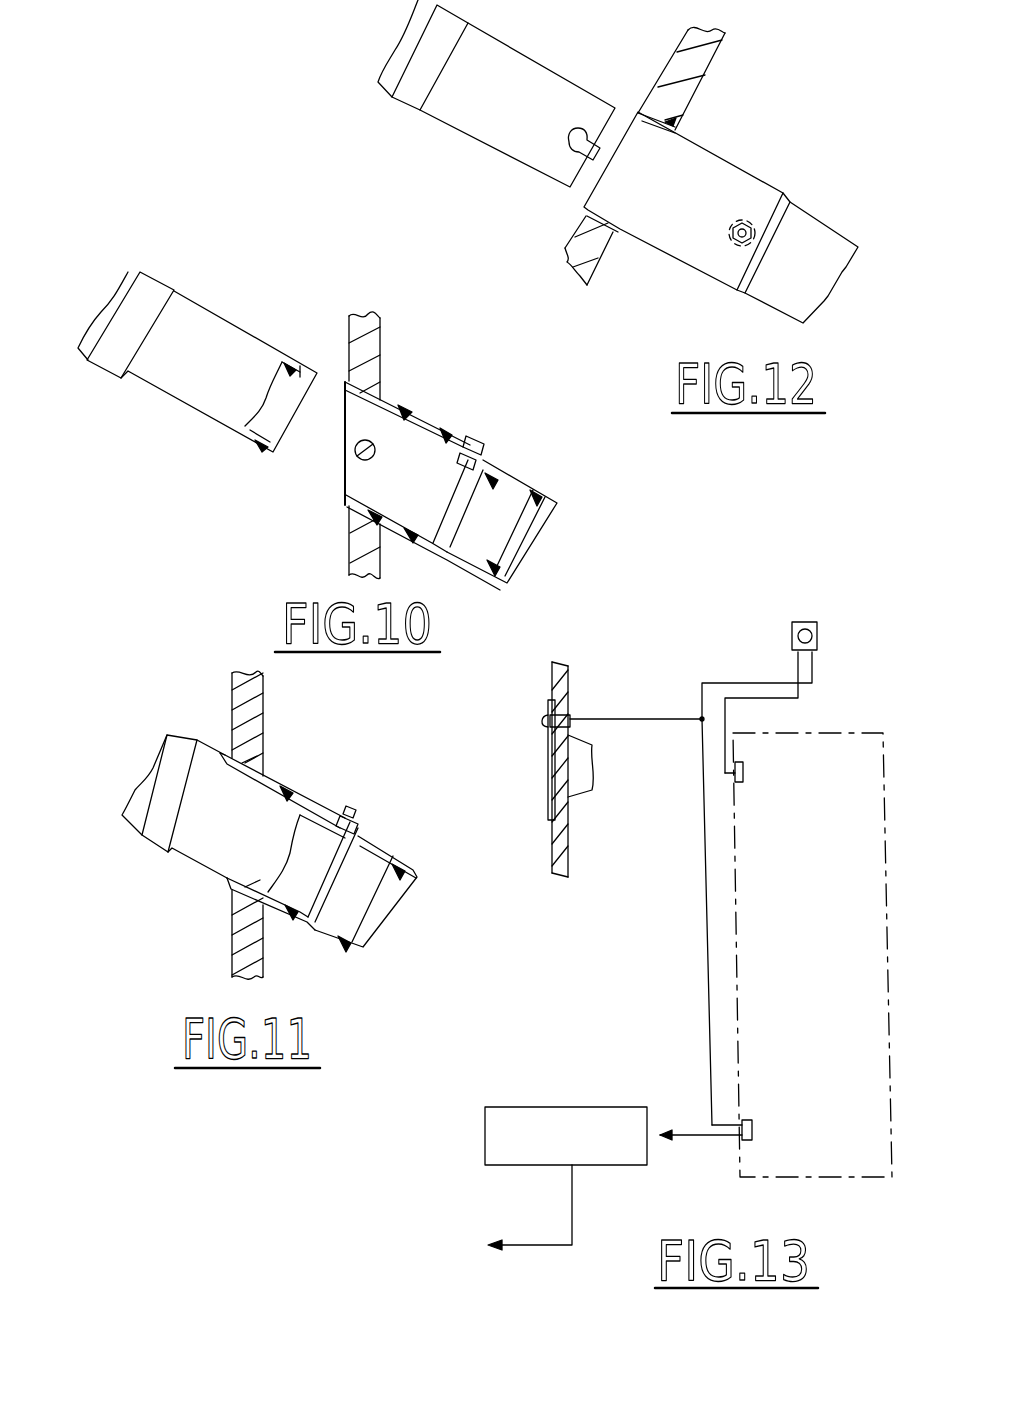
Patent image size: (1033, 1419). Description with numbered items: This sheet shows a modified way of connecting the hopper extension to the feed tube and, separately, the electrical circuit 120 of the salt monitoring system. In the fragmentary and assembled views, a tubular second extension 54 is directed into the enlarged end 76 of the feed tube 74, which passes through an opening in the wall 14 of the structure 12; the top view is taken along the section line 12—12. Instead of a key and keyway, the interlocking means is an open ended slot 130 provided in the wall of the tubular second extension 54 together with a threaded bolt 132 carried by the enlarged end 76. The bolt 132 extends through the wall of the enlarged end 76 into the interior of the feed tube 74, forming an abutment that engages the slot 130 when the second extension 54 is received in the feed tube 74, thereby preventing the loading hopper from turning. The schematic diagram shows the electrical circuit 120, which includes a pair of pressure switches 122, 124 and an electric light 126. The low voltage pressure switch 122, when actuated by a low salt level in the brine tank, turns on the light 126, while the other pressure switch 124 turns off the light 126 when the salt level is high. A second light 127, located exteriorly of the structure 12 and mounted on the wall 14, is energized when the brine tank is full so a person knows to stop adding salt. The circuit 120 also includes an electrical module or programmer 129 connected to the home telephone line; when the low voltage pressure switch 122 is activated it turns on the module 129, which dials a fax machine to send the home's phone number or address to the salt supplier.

In FIG. 10, the structure 12 is at (150, 263).
In FIG. 10, the wall 14 is at (377, 350).
In FIG. 11, the wall 14 is at (258, 733).
In FIG. 12, the wall 14 is at (707, 63).
In FIG. 13, the wall 14 is at (570, 838).
In FIG. 10, the tubular second extension 54 is at (214, 327).
In FIG. 11, the tubular second extension 54 is at (211, 813).
In FIG. 12, the tubular second extension 54 is at (513, 63).
In FIG. 10, the feed tube 74 is at (502, 497).
In FIG. 11, the feed tube 74 is at (388, 857).
In FIG. 12, the feed tube 74 is at (832, 233).
In FIG. 10, the enlarged end 76 is at (420, 417).
In FIG. 11, the enlarged end 76 is at (302, 797).
In FIG. 12, the open ended slot 130 is at (588, 135).
In FIG. 12, the threaded bolt 132 is at (742, 222).
In FIG. 13, the electrical circuit 120 is at (686, 652).
In FIG. 13, the low voltage pressure switch 122 is at (753, 1132).
In FIG. 13, the pressure switch 124 is at (744, 772).
In FIG. 13, the electric light 126 is at (820, 636).
In FIG. 13, the second light 127 is at (546, 716).
In FIG. 13, the electrical module or programmer 129 is at (570, 1107).